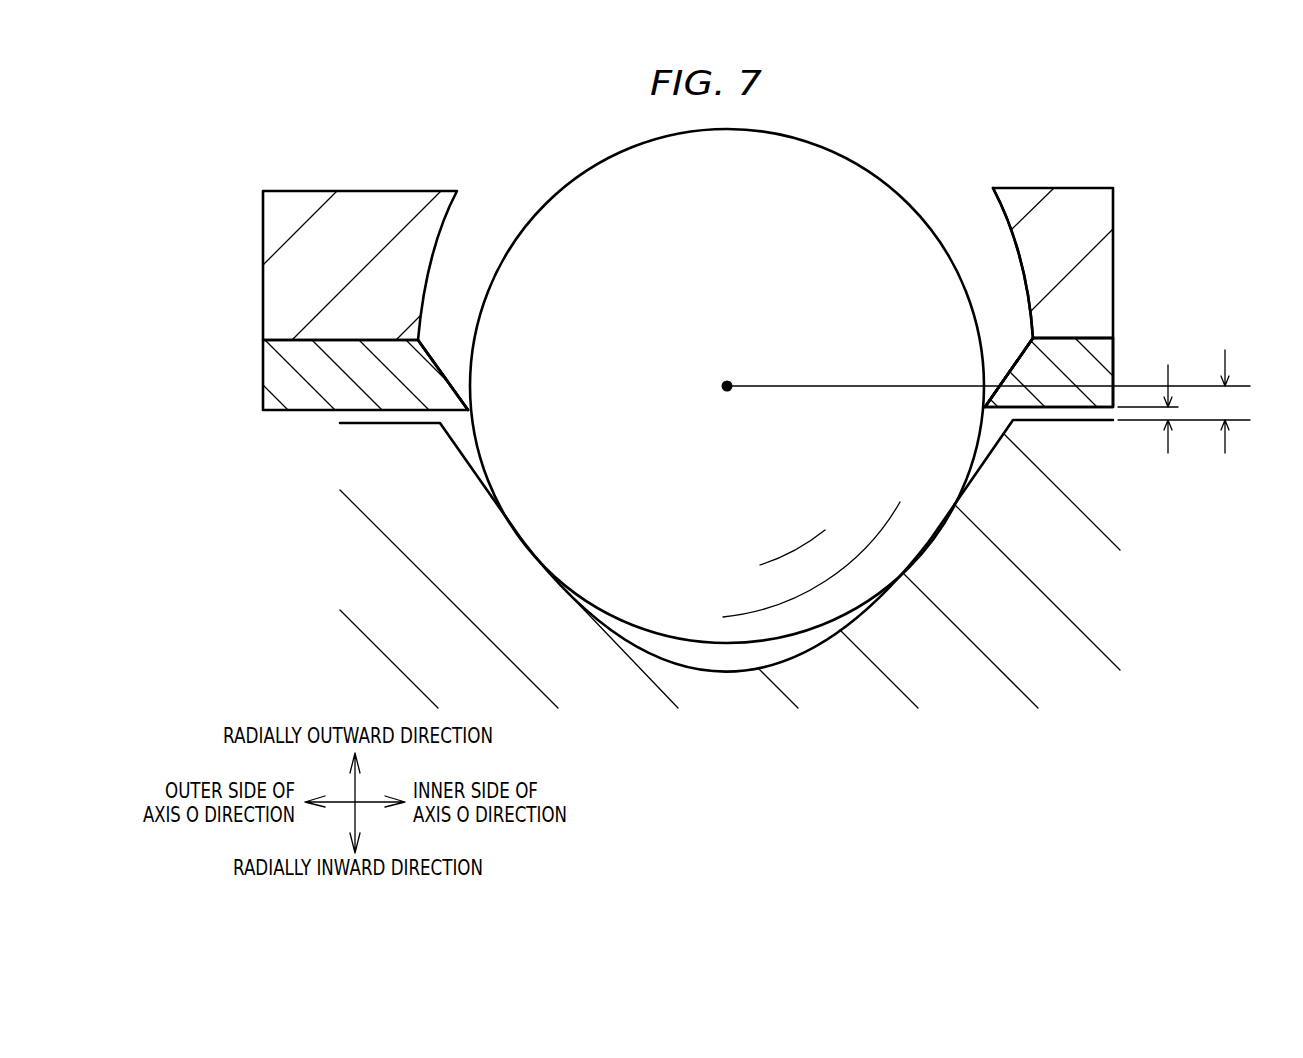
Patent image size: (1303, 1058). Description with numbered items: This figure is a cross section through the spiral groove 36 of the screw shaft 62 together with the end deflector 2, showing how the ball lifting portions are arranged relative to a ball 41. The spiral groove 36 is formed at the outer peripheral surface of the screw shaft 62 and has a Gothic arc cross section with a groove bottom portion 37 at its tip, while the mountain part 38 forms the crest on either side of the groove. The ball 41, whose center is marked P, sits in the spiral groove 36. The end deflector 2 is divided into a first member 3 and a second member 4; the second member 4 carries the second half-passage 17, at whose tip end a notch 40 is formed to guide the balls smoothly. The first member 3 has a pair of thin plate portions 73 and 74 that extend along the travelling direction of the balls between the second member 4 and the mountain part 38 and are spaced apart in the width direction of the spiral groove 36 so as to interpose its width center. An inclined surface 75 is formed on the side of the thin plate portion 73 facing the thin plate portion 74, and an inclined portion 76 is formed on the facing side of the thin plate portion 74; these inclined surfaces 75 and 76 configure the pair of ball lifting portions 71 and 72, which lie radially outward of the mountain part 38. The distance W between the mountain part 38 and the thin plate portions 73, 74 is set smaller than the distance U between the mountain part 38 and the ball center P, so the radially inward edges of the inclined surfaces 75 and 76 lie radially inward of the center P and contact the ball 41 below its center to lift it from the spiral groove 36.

The end deflector 2 is at (1076, 263).
The first member 3 is at (1121, 333).
The second member 4 is at (1095, 217).
The second half-passage 17 is at (450, 208).
The spiral groove 36 is at (978, 462).
The groove bottom portion 37 is at (746, 673).
The mountain part 38 is at (360, 423).
The notch 40 is at (993, 188).
The ball 41 is at (898, 195).
The screw shaft 62 is at (1087, 564).
The ball lifting portion 71 is at (437, 365).
The ball lifting portion 72 is at (996, 335).
The thin plate portion 73 is at (277, 375).
The thin plate portion 74 is at (1103, 358).
The inclined surface 75 is at (453, 325).
The inclined portion 76 is at (996, 322).
The center of the ball P is at (728, 383).
The distance between mountain part and thin plate portions W is at (1168, 412).
The distance between mountain part and ball center U is at (1227, 402).